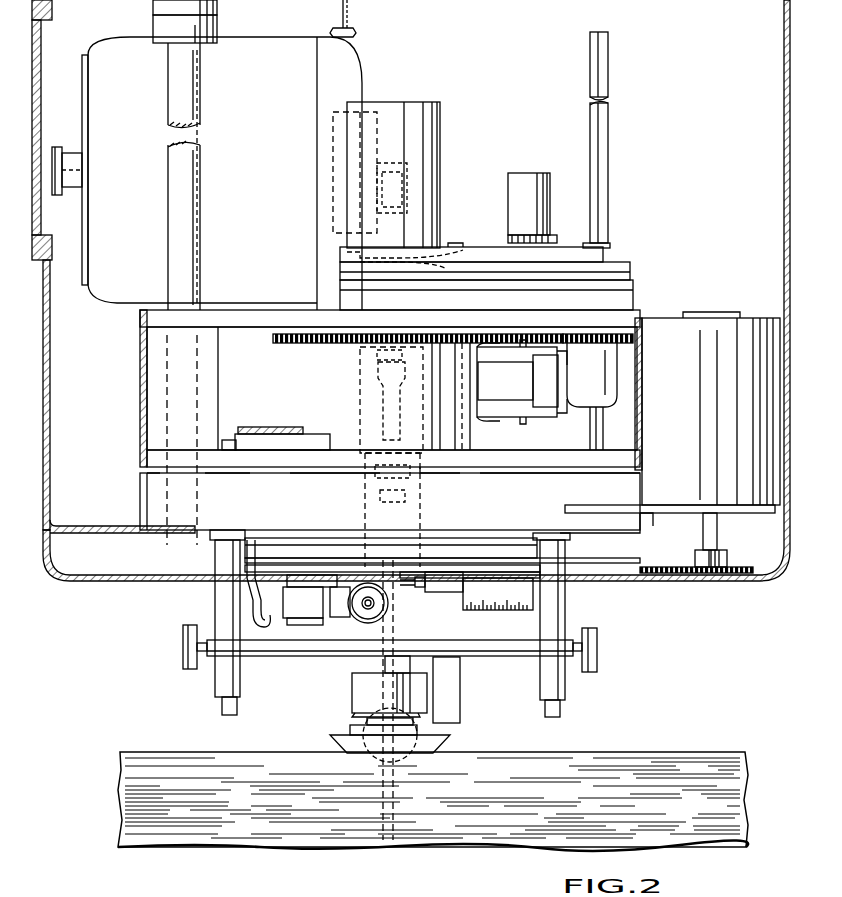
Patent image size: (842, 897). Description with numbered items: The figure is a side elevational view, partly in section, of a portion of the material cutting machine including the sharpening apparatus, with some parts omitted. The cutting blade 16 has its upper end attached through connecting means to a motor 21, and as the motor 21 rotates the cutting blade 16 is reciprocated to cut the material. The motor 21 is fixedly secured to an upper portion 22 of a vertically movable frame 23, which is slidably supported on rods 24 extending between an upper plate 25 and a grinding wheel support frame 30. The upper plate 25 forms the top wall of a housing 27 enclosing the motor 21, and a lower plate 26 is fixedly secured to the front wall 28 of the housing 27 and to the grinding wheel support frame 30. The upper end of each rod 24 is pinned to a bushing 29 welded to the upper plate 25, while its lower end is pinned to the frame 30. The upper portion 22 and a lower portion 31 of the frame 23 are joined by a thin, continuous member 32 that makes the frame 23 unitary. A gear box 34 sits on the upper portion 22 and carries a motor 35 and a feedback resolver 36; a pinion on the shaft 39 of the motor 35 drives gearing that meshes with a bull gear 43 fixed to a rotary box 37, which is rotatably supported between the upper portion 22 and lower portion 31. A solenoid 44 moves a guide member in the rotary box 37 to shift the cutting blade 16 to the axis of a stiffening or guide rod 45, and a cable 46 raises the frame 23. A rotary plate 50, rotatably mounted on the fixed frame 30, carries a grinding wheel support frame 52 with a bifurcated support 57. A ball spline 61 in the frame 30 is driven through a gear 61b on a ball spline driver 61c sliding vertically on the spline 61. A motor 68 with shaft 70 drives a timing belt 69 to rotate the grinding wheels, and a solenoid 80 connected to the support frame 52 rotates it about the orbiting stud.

The cutting blade 16 is at (378, 636).
The motor 21 is at (267, 183).
The upper portion 22 is at (250, 320).
The vertically movable frame 23 is at (220, 366).
The rods 24 is at (200, 243).
The upper plate 25 is at (216, 15).
The lower plate 26 is at (90, 534).
The housing 27 is at (43, 402).
The front wall 28 is at (46, 573).
The bushing 29 is at (218, 32).
The grinding wheel support frame 30 is at (138, 495).
The lower portion 31 is at (225, 442).
The thin, continuous member 32 is at (638, 406).
The gear box 34 is at (630, 283).
The motor 35 is at (422, 103).
The feedback resolver 36 is at (528, 173).
The rotary box 37 is at (322, 388).
The shaft 39 is at (462, 251).
The bull gear 43 is at (283, 340).
The solenoid 44 is at (525, 391).
The stiffening or guide rod 45 is at (398, 606).
The cable 46 is at (350, 24).
The rotary plate 50 is at (534, 553).
The grinding wheel support frame 52 is at (317, 614).
The bifurcated support 57 is at (345, 607).
The ball spline 61 is at (605, 163).
The gear 61b is at (636, 340).
The ball spline driver 61c is at (576, 408).
The motor 68 is at (698, 450).
The timing belt 69 is at (661, 567).
The shaft 70 is at (718, 540).
The solenoid 80 is at (450, 590).